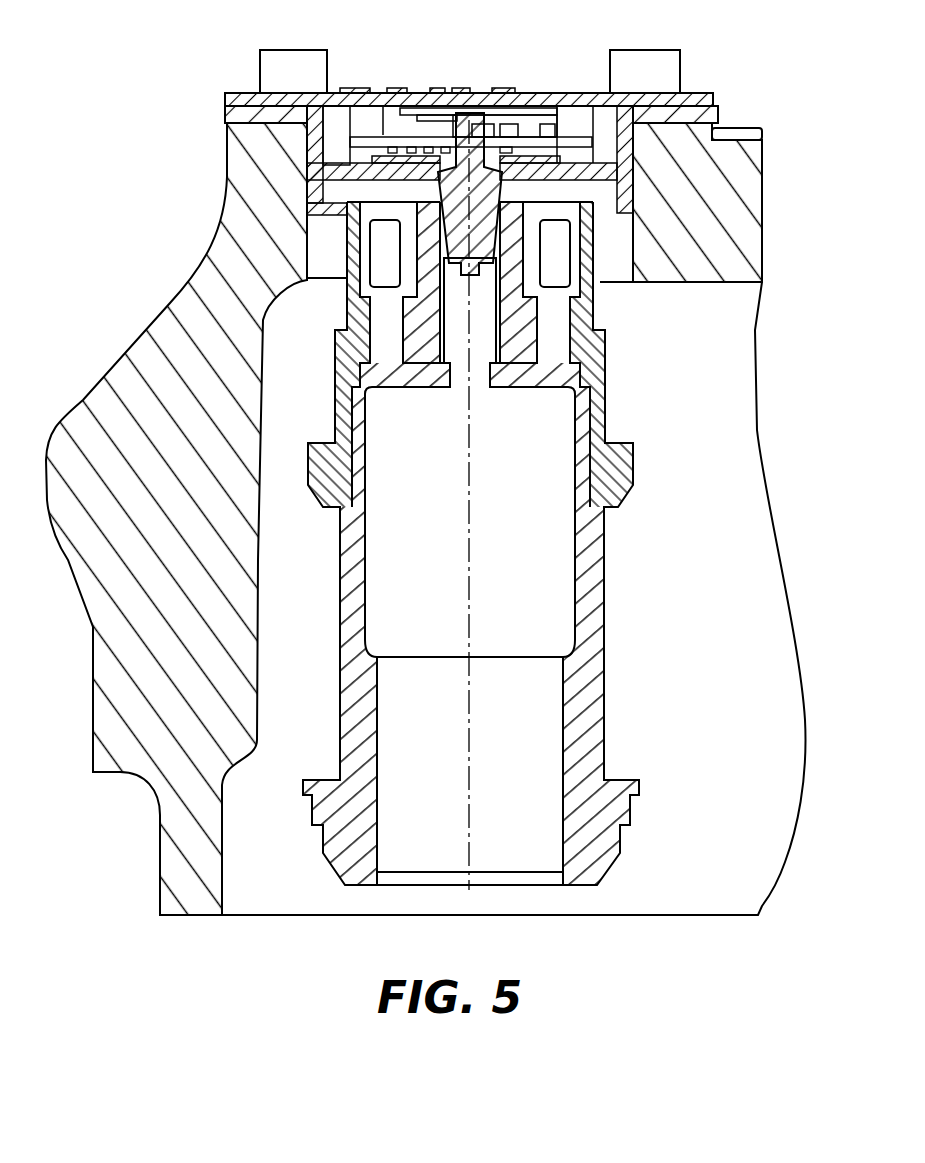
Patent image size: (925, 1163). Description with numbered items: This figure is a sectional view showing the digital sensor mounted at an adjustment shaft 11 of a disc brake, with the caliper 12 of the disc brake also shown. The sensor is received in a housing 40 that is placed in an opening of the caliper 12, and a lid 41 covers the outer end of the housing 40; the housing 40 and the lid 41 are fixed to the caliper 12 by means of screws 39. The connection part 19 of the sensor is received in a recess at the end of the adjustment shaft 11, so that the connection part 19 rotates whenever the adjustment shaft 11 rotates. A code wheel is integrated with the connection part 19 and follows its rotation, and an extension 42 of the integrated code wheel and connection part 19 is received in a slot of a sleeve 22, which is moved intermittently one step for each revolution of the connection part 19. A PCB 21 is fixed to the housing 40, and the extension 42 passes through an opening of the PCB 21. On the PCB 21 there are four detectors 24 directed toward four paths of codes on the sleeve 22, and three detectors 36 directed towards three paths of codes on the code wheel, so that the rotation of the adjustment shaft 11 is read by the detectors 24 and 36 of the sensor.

The adjustment shaft 11 is at (535, 552).
The caliper 12 is at (128, 383).
The connection part 19 is at (480, 243).
The PCB 21 is at (563, 137).
The sleeve 22 is at (497, 107).
The detectors 24 is at (432, 133).
The detectors 36 is at (393, 147).
The screws 39 is at (640, 72).
The housing 40 is at (235, 113).
The lid 41 is at (238, 93).
The extension 42 is at (465, 102).